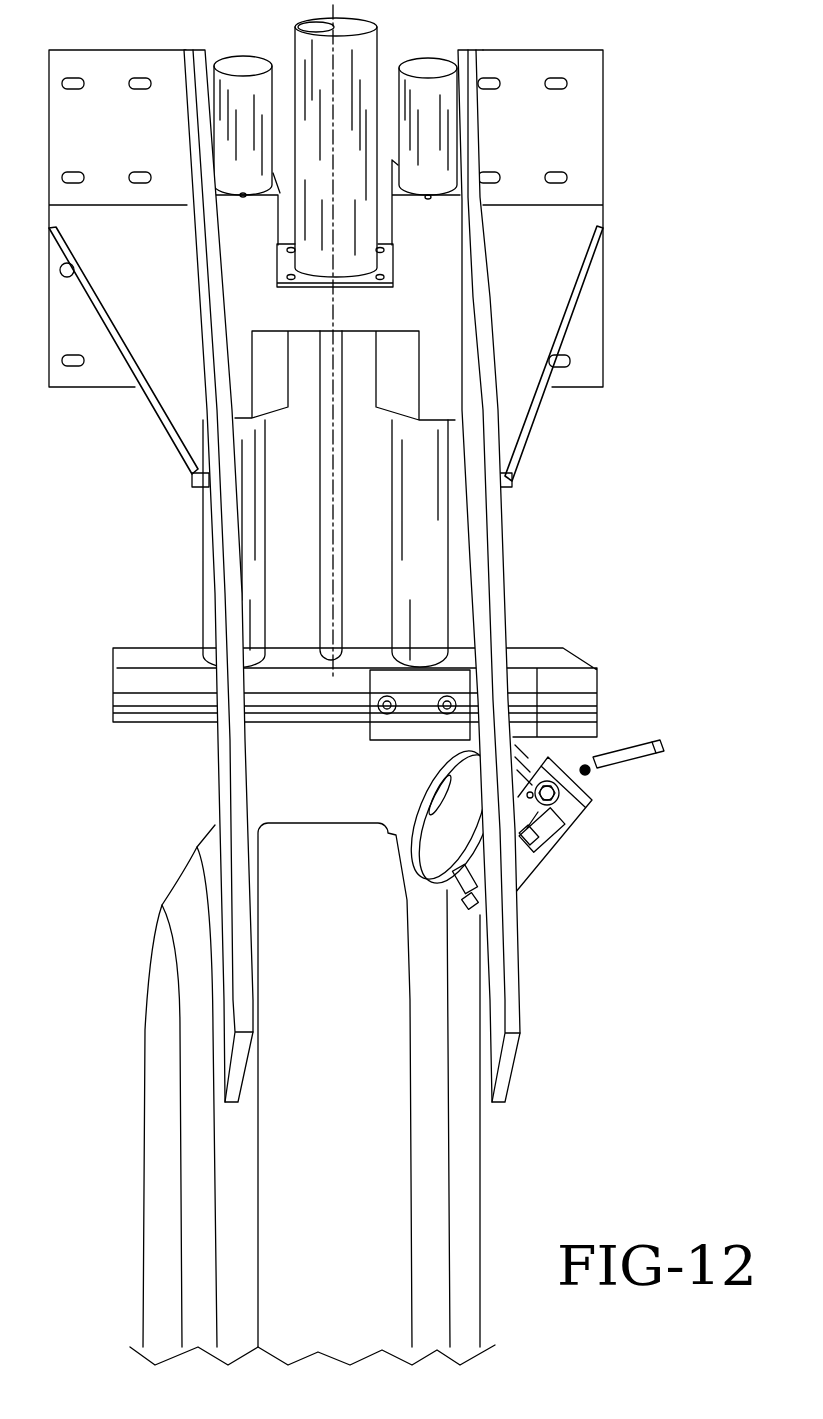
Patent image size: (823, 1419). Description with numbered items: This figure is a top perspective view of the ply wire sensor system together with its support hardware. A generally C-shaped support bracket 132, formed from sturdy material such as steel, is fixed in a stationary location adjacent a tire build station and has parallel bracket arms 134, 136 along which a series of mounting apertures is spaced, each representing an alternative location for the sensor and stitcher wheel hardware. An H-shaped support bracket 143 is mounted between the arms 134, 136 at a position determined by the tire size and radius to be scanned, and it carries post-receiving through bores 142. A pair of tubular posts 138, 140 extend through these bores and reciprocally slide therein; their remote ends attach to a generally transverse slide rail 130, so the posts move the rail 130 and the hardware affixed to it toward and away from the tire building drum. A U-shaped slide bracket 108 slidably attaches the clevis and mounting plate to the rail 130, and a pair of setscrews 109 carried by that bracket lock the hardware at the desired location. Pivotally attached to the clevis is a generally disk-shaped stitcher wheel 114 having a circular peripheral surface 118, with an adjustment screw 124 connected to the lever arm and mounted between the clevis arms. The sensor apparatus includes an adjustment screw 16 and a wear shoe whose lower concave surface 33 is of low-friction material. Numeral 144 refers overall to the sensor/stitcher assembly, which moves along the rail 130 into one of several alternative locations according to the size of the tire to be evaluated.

The H-shaped support bracket 143 is at (397, 315).
The C-shaped support bracket 132 is at (552, 283).
The post-receiving through bore 142 is at (243, 365).
The tubular post 140 is at (243, 485).
The tubular post 138 is at (430, 487).
The bracket arm 136 is at (230, 553).
The bracket arm 134 is at (497, 548).
The U-shaped slide bracket 108 is at (433, 690).
The setscrews 109 is at (447, 704).
The slide rail 130 is at (150, 698).
The adjustment screw 124 is at (632, 745).
The sensor/stitcher assembly 144 is at (622, 776).
The adjustment screw 16 is at (552, 830).
The stitcher wheel 114 is at (457, 810).
The circular peripheral surface 118 is at (433, 885).
The lower concave surface 33 is at (452, 905).